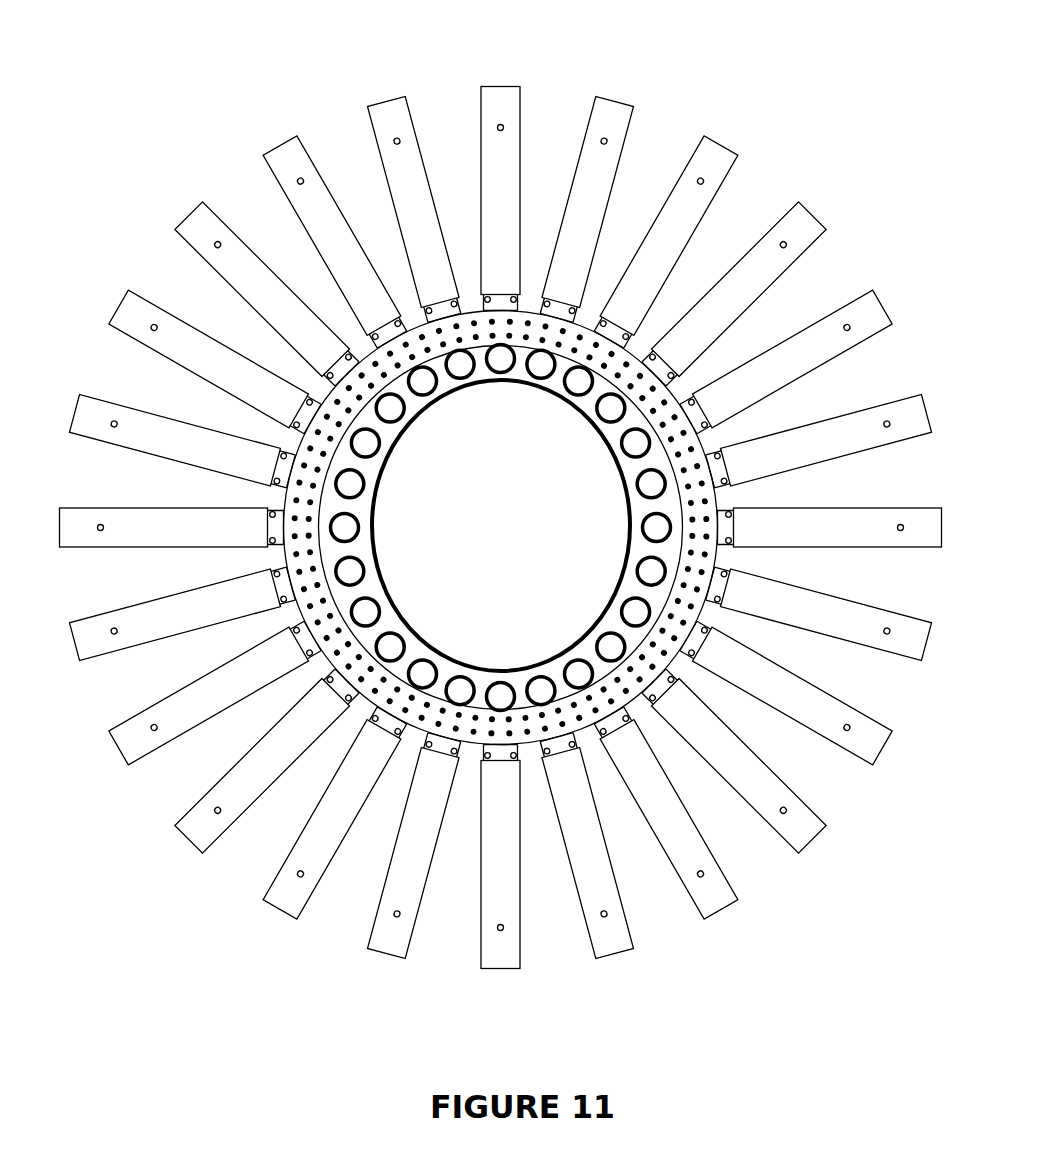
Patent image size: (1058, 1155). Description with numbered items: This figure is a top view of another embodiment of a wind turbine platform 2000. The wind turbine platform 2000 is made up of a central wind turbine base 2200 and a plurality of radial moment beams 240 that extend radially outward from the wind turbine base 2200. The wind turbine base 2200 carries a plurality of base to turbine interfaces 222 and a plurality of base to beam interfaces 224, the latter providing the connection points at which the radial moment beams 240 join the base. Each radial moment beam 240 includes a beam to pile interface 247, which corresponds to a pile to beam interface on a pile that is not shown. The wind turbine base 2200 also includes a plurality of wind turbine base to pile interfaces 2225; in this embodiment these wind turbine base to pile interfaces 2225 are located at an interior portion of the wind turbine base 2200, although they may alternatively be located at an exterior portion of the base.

The wind turbine platform 2000 is at (161, 53).
The radial moment beam 240 is at (517, 163).
The beam to pile interface 247 is at (504, 124).
The base to turbine interface 222 is at (724, 481).
The base to beam interface 224 is at (307, 653).
The wind turbine base 2200 is at (676, 659).
The wind turbine base to pile interface 2225 is at (572, 405).